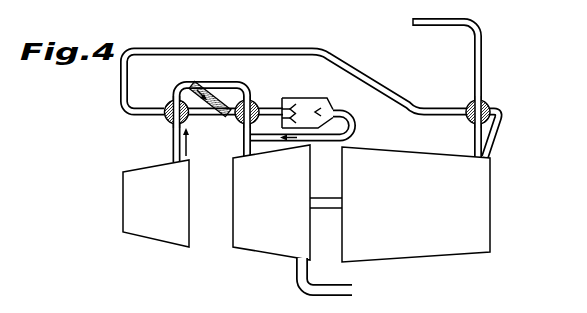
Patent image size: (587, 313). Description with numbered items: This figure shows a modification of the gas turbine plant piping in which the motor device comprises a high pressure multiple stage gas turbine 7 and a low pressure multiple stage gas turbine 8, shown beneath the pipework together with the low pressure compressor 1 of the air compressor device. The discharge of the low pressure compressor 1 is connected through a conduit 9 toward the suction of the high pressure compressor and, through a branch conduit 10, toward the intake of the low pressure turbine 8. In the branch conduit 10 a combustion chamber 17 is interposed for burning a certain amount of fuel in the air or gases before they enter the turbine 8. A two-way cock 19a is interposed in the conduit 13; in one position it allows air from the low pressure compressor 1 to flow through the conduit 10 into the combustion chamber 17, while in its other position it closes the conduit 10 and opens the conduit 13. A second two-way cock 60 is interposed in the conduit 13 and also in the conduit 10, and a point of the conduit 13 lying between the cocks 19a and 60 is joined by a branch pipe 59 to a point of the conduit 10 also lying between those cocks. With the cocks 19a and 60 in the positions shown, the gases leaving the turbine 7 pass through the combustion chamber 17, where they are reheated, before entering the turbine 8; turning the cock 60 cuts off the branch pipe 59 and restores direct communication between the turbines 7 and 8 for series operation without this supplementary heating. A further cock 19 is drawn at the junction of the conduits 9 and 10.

The low pressure compressor 1 is at (420, 254).
The multiple stage gas turbine 7 is at (153, 237).
The multiple stage gas turbine 8 is at (263, 247).
The conduit 9 is at (483, 48).
The branch conduit 10 is at (298, 49).
The conduit 13 is at (228, 81).
The combustion chamber 17 is at (307, 109).
The valve 19 is at (487, 102).
The two-way cock 19a is at (168, 120).
The branch pipe 59 is at (207, 90).
The two-way cock 60 is at (250, 100).